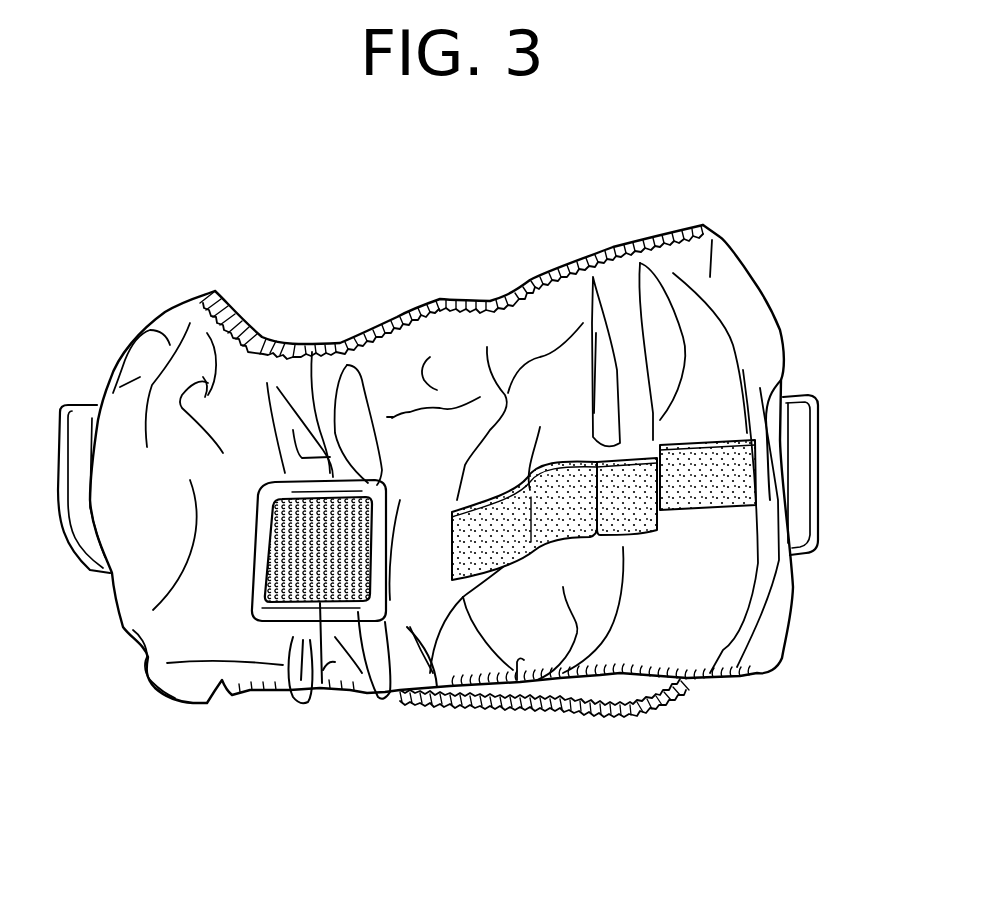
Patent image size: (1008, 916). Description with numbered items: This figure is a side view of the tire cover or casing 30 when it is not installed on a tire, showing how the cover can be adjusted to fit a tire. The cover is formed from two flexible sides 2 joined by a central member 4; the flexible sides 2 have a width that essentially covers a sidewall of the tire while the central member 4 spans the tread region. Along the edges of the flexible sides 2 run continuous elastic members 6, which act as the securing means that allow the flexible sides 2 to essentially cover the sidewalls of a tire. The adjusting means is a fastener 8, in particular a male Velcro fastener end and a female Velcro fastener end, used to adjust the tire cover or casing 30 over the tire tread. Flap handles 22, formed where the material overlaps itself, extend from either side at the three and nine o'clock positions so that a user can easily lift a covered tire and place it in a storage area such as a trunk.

The tire cover or casing 30 is at (823, 897).
The flexible sides 2 is at (753, 275).
The central member 4 is at (783, 375).
The continuous elastic members 6 is at (660, 235).
The fastener 8 is at (420, 690).
The flap handles 22 is at (80, 437).